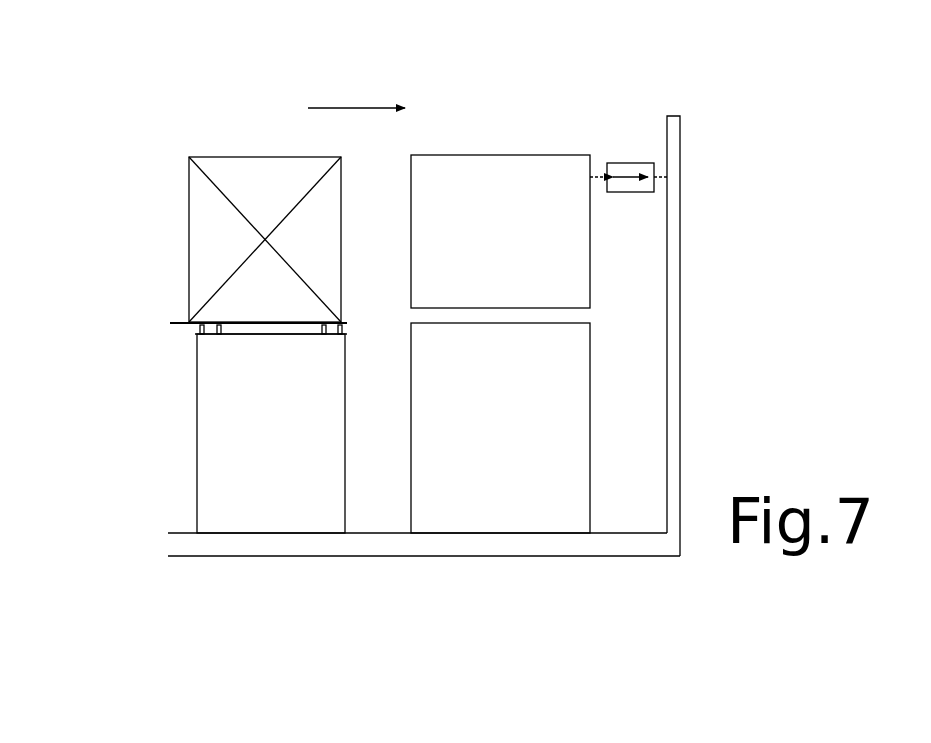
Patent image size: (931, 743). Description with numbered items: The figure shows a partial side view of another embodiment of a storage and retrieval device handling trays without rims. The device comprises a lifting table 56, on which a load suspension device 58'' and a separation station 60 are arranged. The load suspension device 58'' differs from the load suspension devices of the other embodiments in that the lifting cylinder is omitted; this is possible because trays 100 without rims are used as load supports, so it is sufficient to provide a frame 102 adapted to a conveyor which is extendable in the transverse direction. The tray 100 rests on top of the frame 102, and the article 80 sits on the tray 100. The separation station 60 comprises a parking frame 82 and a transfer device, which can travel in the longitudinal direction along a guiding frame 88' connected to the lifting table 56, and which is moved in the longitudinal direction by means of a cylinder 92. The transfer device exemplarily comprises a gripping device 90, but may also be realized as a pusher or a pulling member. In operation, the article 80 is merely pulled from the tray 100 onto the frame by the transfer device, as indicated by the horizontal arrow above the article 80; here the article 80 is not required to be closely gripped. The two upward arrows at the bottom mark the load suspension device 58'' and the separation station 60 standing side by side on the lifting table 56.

The lifting table 56 is at (603, 557).
The load suspension device 58'' is at (271, 583).
The separation station 60 is at (517, 498).
The article 80 is at (255, 156).
The parking frame 82 is at (415, 408).
The guiding frame 88' is at (751, 336).
The gripping device 90 is at (520, 245).
The cylinder 92 is at (628, 163).
The tray without rim 100 is at (188, 323).
The frame 102 is at (197, 437).